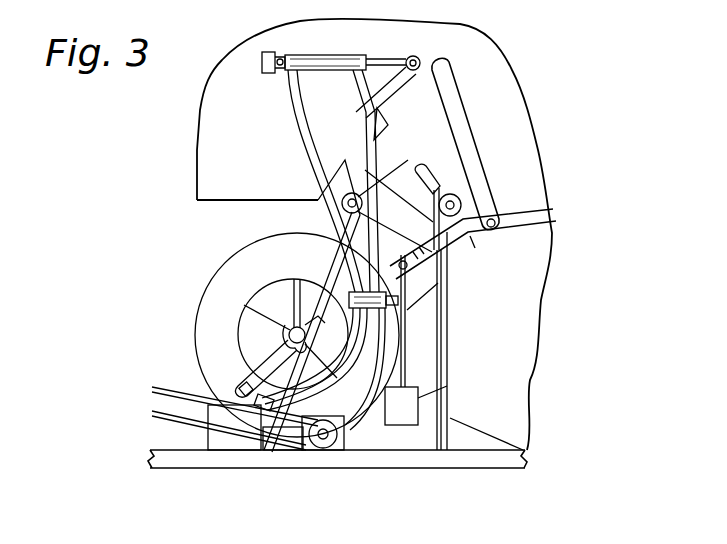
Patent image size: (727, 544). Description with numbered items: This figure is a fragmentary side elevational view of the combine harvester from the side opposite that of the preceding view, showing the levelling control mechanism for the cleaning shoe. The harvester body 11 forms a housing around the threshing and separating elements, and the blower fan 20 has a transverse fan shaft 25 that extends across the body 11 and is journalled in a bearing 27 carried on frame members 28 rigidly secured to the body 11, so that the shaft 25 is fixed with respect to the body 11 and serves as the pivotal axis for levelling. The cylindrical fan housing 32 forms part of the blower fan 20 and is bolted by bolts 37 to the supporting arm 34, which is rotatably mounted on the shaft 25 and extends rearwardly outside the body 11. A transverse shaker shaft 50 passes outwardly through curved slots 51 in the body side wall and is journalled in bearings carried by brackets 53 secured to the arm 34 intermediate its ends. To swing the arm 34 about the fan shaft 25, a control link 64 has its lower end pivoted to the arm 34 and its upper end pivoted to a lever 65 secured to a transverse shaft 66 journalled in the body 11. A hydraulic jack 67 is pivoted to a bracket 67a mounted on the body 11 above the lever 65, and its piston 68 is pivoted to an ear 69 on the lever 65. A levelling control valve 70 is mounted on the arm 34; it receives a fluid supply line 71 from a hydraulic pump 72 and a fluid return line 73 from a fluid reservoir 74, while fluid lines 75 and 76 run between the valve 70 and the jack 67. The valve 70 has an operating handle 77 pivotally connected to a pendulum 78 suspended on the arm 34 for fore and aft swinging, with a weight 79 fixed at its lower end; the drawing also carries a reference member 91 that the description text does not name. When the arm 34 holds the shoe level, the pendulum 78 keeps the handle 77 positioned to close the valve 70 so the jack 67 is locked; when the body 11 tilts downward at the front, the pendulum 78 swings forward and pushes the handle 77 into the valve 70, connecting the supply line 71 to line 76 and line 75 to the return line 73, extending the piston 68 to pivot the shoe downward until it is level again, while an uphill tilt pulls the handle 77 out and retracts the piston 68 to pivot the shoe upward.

The body 11 is at (247, 143).
The blower fan 20 is at (262, 313).
The fan shaft 25 is at (297, 327).
The bearing 27 is at (292, 327).
The frame members 28 is at (350, 262).
The fan housing 32 is at (215, 292).
The supporting arm 34 is at (260, 368).
The bolts 37 is at (244, 386).
The shaker shaft 50 is at (458, 204).
The curved slots 51 is at (441, 190).
The brackets 53 is at (432, 194).
The control link 64 is at (467, 140).
The lever 65 is at (385, 100).
The transverse shaft 66 is at (343, 204).
The hydraulic jack 67 is at (327, 56).
The bracket 67a is at (263, 67).
The piston 68 is at (388, 58).
The ear 69 is at (421, 60).
The levelling control valve 70 is at (390, 304).
The fluid supply line 71 is at (366, 401).
The hydraulic pump 72 is at (345, 440).
The fluid return line 73 is at (347, 364).
The fluid reservoir 74 is at (212, 436).
The fluid supply line 75 is at (318, 163).
The fluid supply line 76 is at (356, 108).
The operating handle 77 is at (405, 296).
The pendulum 78 is at (405, 360).
The weight 79 is at (412, 413).
The column 91 is at (428, 303).